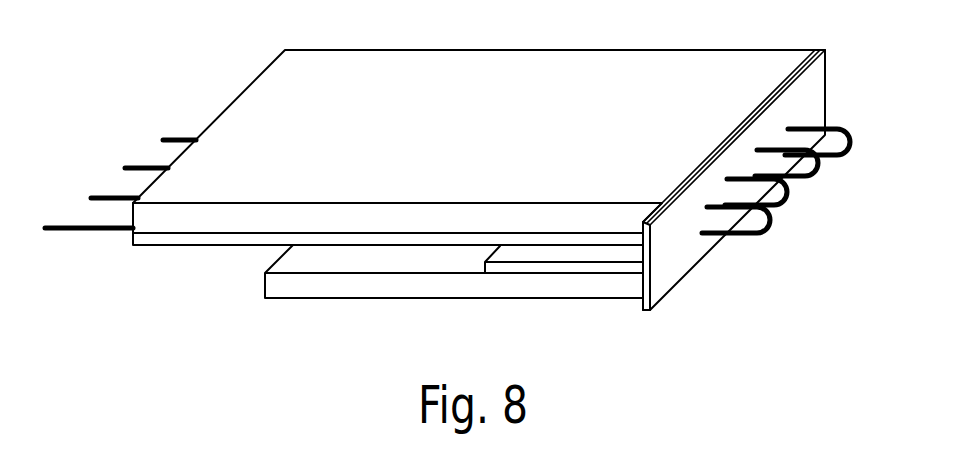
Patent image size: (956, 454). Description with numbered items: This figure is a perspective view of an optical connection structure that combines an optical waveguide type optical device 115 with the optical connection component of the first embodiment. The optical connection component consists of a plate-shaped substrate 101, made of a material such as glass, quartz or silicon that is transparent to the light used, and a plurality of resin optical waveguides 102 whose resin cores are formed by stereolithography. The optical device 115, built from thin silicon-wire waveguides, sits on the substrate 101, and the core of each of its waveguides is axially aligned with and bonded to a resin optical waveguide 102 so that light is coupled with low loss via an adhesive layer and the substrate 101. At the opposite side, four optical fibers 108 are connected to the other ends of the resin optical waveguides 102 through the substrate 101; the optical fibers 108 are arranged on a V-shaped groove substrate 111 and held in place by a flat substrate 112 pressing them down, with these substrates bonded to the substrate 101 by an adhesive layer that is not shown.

The substrate 101 is at (826, 62).
The resin optical waveguide 102 is at (772, 220).
The optical fiber 108 is at (163, 138).
The V-shaped groove substrate 111 is at (326, 291).
The flat substrate 112 is at (551, 270).
The optical waveguide type optical device 115 is at (594, 48).